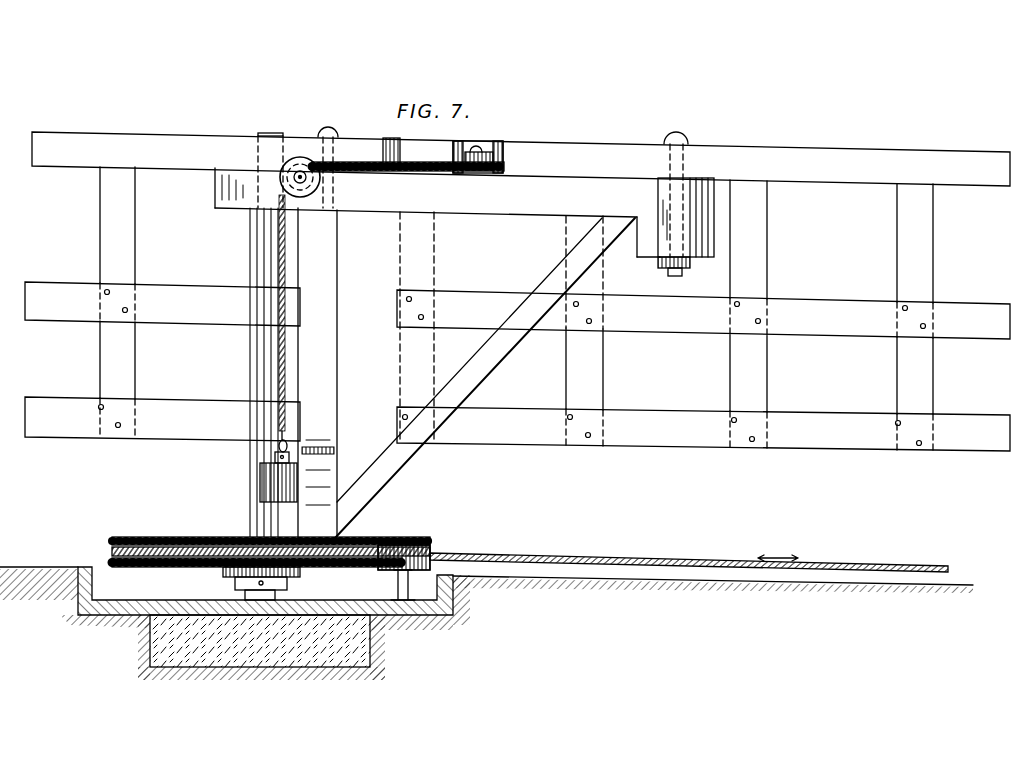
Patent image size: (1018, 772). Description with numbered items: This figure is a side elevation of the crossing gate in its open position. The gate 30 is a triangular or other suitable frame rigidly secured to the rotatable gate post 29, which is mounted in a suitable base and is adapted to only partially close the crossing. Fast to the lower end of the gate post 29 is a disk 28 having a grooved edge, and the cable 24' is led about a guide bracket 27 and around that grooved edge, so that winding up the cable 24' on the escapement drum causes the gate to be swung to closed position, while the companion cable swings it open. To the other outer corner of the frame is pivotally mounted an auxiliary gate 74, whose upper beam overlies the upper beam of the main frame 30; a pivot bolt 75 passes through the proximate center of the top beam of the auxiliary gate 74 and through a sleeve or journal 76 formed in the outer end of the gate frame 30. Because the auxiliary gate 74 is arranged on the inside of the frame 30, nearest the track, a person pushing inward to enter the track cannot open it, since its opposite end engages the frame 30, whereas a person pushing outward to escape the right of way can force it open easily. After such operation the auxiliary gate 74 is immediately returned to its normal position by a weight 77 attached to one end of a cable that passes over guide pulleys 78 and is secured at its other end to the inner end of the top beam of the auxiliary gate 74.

The auxiliary gate 74 is at (757, 236).
The pivot bolt 75 is at (684, 139).
The sleeve or journal 76 is at (712, 190).
The weight 77 is at (260, 490).
The guide pulleys 78 is at (297, 160).
The gate 30 is at (332, 362).
The gate post 29 is at (257, 456).
The disk 28 is at (160, 537).
The guide bracket 27 is at (420, 545).
The cable 24' is at (689, 550).